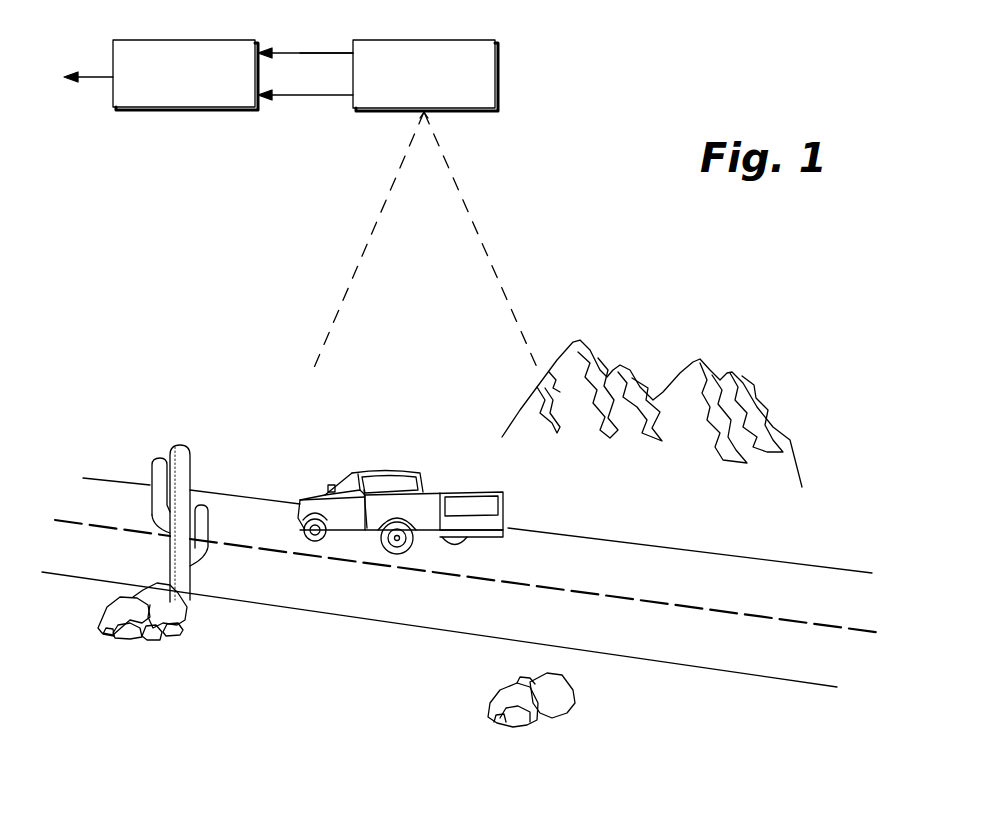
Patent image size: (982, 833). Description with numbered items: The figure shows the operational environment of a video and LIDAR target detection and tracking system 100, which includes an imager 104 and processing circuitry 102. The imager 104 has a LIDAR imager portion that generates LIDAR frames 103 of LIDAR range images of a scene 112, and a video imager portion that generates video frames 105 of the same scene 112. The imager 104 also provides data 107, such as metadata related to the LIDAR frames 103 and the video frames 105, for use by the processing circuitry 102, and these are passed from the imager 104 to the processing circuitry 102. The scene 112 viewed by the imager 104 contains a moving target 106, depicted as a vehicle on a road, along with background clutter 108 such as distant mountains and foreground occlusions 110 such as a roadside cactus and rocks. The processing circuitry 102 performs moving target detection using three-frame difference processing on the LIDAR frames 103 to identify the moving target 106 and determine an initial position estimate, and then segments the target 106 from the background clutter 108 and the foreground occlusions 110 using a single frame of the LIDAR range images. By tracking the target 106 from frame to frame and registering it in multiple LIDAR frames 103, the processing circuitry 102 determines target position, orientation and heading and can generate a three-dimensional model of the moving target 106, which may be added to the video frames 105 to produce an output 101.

The video and LIDAR target detection and tracking system 100 is at (528, 143).
The output 101 is at (86, 75).
The processing circuitry 102 is at (148, 112).
The LIDAR frames 103 is at (298, 52).
The imager 104 is at (499, 62).
The video frames 105 is at (334, 52).
The moving target 106 is at (400, 470).
The data 107 is at (313, 97).
The background clutter 108 is at (748, 398).
The foreground occlusions 110 is at (178, 567).
The scene 112 is at (680, 528).